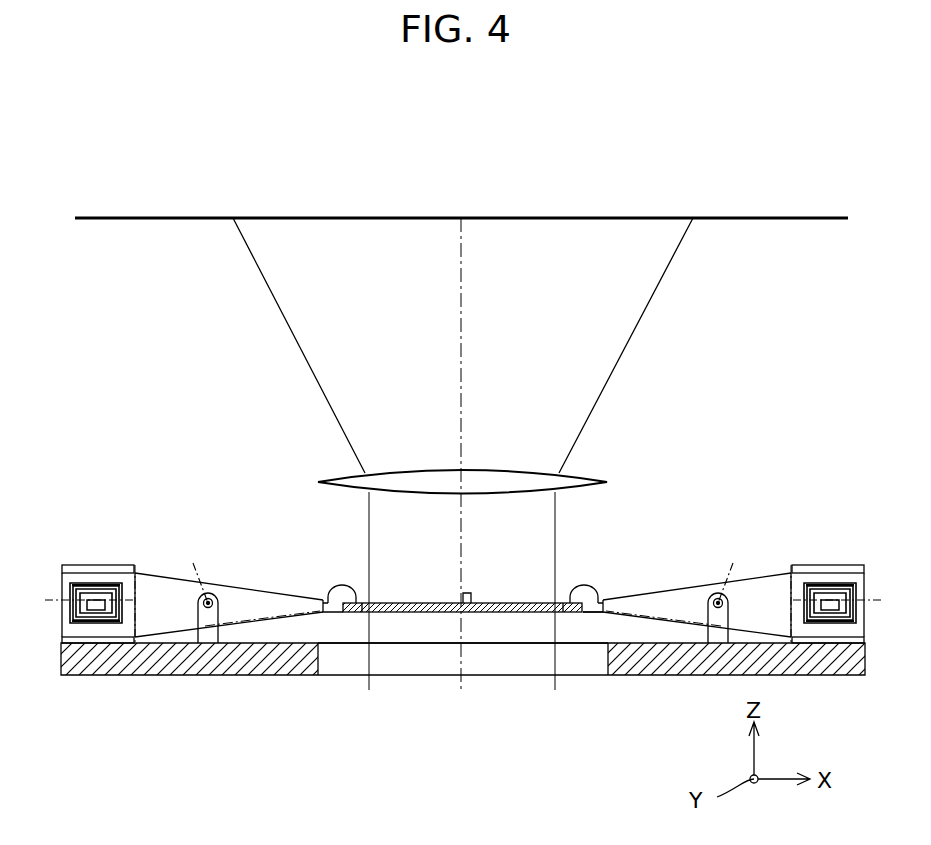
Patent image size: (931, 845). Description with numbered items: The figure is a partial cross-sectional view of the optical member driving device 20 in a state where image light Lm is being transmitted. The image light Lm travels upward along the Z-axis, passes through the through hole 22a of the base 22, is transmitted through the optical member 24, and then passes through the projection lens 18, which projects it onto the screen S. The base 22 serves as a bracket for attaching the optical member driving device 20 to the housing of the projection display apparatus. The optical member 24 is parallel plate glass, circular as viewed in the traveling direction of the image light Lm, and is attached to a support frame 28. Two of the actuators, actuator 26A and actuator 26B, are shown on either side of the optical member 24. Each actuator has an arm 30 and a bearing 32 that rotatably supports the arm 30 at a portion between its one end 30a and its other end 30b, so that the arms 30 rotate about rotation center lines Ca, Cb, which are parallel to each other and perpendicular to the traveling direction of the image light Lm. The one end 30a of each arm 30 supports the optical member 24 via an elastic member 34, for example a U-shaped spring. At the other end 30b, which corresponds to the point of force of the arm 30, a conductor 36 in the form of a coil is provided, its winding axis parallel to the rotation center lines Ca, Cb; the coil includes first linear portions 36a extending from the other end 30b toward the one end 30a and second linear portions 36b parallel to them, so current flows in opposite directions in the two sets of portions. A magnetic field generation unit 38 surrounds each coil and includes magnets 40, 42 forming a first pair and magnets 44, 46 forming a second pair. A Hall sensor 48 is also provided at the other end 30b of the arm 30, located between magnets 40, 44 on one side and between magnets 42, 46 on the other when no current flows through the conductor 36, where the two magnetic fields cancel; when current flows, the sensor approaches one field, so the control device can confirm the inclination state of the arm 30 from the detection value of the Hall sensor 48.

The projection lens 18 is at (496, 477).
The optical member driving device 20 is at (134, 418).
The base 22 is at (301, 677).
The through hole 22a is at (538, 668).
The optical member 24 is at (405, 603).
The actuator 26A is at (233, 522).
The actuator 26B is at (726, 510).
The support frame 28 is at (574, 613).
The arm 30 is at (702, 585).
The one end 30a is at (604, 600).
The other end 30b is at (798, 563).
The bearing 32 is at (702, 608).
The elastic member 34 is at (595, 592).
The conductor 36 is at (856, 603).
The first linear portion 36a is at (813, 585).
The second linear portion 36b is at (819, 624).
The magnetic field generation unit 38 is at (824, 492).
The magnet 40 is at (61, 566).
The magnet 42 is at (866, 566).
The magnet 44 is at (61, 641).
The magnet 46 is at (866, 641).
The Hall sensor 48 is at (820, 606).
The screen S is at (132, 219).
The image light Lm is at (637, 328).
The rotation center line Ca is at (196, 569).
The rotation center line Cb is at (734, 569).